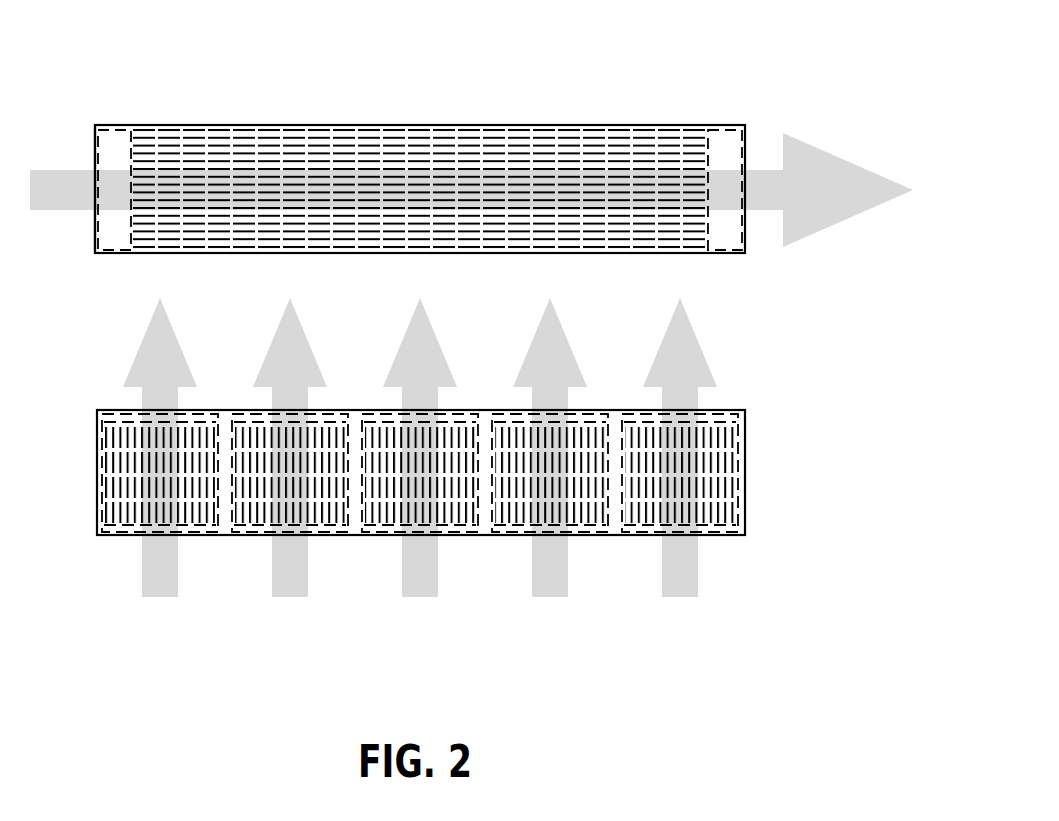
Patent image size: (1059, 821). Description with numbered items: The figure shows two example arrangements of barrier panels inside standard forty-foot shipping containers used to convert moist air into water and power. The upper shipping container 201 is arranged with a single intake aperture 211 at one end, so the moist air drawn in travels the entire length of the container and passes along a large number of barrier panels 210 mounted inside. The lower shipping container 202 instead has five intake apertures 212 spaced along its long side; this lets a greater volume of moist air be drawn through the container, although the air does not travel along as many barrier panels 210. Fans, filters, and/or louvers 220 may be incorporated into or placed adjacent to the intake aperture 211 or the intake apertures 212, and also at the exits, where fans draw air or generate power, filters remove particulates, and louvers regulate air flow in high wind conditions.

The shipping container 201 is at (420, 128).
The shipping container 202 is at (421, 541).
The light emitting elements 210 is at (670, 233).
The intake aperture 211 is at (61, 155).
The intake apertures 212 is at (420, 536).
The louvers 220 is at (120, 222).